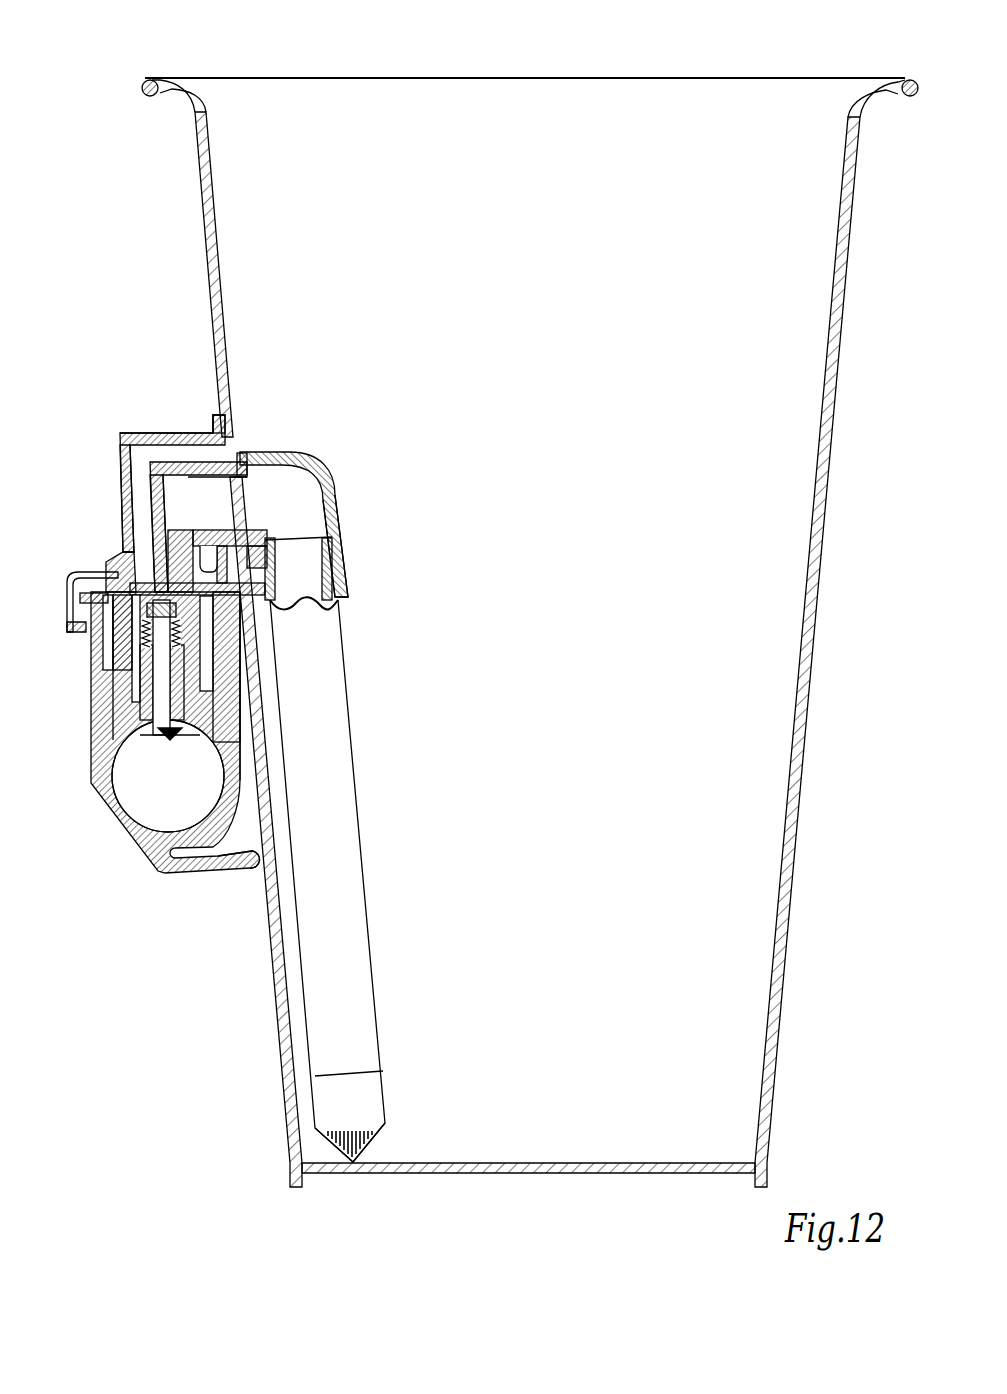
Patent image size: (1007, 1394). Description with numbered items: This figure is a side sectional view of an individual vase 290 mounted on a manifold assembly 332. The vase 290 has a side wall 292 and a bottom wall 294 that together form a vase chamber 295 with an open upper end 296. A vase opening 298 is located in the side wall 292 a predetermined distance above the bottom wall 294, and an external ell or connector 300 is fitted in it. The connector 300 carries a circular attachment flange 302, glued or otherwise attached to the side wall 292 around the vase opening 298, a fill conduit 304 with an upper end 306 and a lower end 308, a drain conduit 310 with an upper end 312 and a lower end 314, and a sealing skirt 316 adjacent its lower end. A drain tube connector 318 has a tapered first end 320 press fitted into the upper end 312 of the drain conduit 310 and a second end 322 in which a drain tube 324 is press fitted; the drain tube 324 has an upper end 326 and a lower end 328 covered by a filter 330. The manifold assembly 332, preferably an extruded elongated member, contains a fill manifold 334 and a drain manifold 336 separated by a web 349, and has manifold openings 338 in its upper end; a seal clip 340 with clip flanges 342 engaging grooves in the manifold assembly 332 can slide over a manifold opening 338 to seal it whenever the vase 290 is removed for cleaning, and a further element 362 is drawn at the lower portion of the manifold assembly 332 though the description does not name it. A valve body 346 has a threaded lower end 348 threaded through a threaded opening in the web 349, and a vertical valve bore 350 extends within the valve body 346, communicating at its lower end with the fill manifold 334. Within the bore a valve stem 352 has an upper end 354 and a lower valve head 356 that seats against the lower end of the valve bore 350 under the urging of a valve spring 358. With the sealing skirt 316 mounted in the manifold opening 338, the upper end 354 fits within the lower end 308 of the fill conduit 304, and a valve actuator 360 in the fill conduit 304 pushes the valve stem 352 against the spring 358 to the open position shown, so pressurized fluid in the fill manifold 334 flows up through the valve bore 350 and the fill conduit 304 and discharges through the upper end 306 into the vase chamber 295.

The vase 290 is at (206, 38).
The side wall 292 is at (847, 163).
The bottom wall 294 is at (540, 1163).
The vase chamber 295 is at (560, 309).
The open upper end 296 is at (397, 80).
The vase opening 298 is at (236, 440).
The external ell or connector 300 is at (120, 438).
The circular attachment flange 302 is at (212, 430).
The fill conduit 304 is at (132, 463).
The upper end of fill conduit 306 is at (244, 452).
The lower end of fill conduit 308 is at (198, 696).
The drain conduit 310 is at (176, 500).
The upper end of drain conduit 312 is at (212, 478).
The lower end of drain conduit 314 is at (196, 652).
The sealing skirt 316 is at (107, 565).
The drain tube connector 318 is at (333, 472).
The first end of drain tube connector 320 is at (166, 478).
The second end of drain tube connector 322 is at (345, 603).
The drain tube 324 is at (372, 857).
The upper end of drain tube 326 is at (340, 522).
The lower end of drain tube 328 is at (380, 1064).
The filter 330 is at (386, 1124).
The manifold assembly 332 is at (91, 752).
The fill manifold 334 is at (118, 788).
The drain manifold 336 is at (125, 668).
The manifold opening 338 is at (95, 622).
The seal clip 340 is at (70, 573).
The clip flanges 342 is at (100, 640).
The valve body 346 is at (150, 690).
The threaded lower end 348 is at (156, 715).
The web 349 is at (234, 766).
The vertical valve bore 350 is at (130, 750).
The valve stem 352 is at (192, 702).
The upper end of valve stem 354 is at (268, 572).
The valve head 356 is at (168, 742).
The valve spring 358 is at (192, 685).
The valve actuator 360 is at (102, 596).
The clip 362 is at (248, 869).